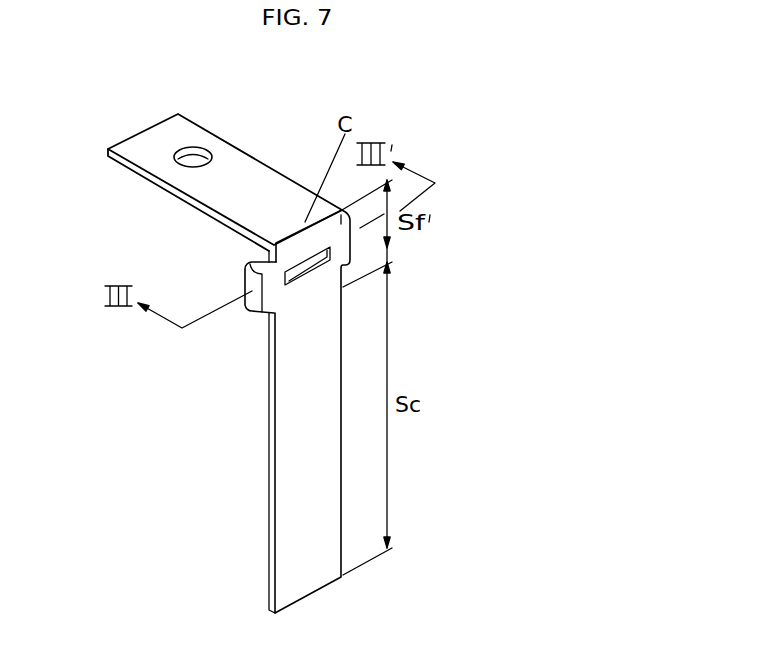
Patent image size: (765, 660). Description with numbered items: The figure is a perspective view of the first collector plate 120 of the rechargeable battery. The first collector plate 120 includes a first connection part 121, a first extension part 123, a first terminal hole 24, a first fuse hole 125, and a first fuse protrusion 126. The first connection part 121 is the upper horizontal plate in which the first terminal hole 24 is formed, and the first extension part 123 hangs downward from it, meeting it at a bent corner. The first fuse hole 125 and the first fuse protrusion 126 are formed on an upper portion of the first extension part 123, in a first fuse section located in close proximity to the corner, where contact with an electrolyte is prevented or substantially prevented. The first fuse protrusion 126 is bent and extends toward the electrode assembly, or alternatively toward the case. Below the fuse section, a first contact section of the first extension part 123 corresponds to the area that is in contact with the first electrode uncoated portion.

The first collector plate 120 is at (440, 133).
The first connection part 121 is at (245, 172).
The first terminal hole 24 is at (192, 148).
The first extension part 123 is at (290, 498).
The first fuse hole 125 is at (305, 274).
The first fuse protrusion 126 is at (250, 280).